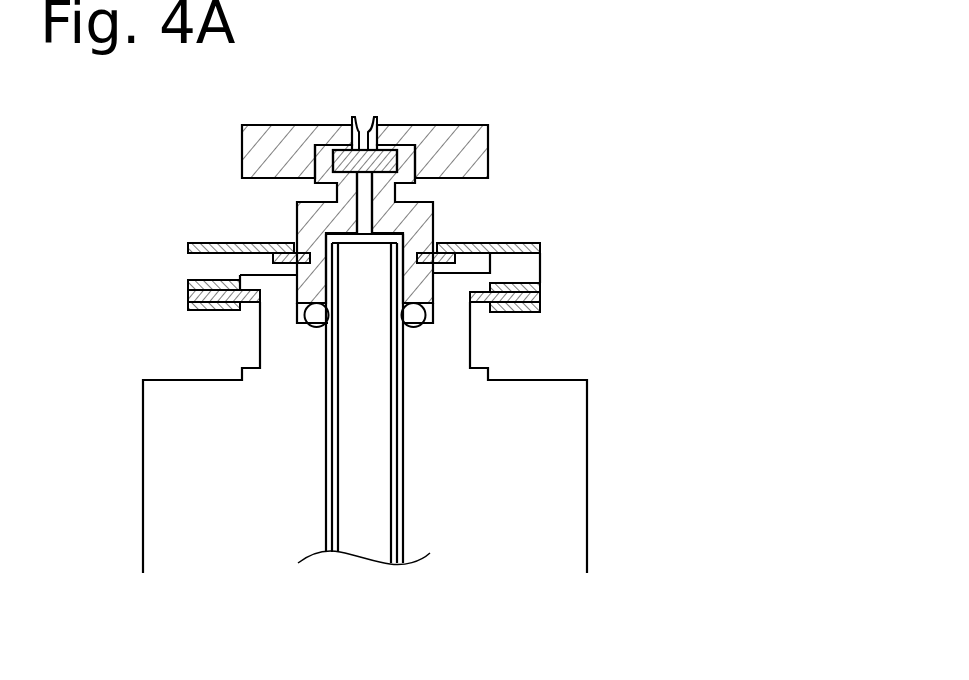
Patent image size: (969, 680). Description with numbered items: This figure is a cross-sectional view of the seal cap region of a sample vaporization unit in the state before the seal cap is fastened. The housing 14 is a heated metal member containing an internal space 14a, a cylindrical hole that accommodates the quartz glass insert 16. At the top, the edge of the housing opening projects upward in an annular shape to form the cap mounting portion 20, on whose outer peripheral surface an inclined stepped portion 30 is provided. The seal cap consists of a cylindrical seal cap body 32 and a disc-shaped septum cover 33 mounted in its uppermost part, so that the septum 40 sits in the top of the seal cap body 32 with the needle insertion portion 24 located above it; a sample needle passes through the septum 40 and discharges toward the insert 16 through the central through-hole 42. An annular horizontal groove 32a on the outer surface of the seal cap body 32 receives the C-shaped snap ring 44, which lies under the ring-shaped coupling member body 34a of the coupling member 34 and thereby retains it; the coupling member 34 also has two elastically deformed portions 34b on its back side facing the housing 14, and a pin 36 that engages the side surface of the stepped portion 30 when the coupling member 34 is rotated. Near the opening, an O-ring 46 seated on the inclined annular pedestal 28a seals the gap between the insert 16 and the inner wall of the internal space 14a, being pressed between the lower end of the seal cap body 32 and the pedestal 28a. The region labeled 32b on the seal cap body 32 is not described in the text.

The housing 14 is at (479, 399).
The internal space 14a is at (403, 495).
The insert 16 is at (380, 407).
The cap mounting portion 20 is at (275, 337).
The needle insertion portion 24 is at (377, 118).
The pedestal 28a is at (403, 332).
The stepped portion 30 is at (243, 282).
The seal cap body 32 is at (407, 234).
The horizontal groove 32a is at (426, 255).
The flange portion 32b is at (488, 268).
The septum cover 33 is at (480, 137).
The coupling member 34 is at (330, 273).
The coupling member body 34a is at (187, 247).
The elastically deformed portion 34b is at (188, 285).
The pin 36 is at (187, 305).
The septum 40 is at (340, 148).
The through-hole 42 is at (363, 215).
The C-shaped snap ring 44 is at (460, 252).
The O-ring 46 is at (415, 317).